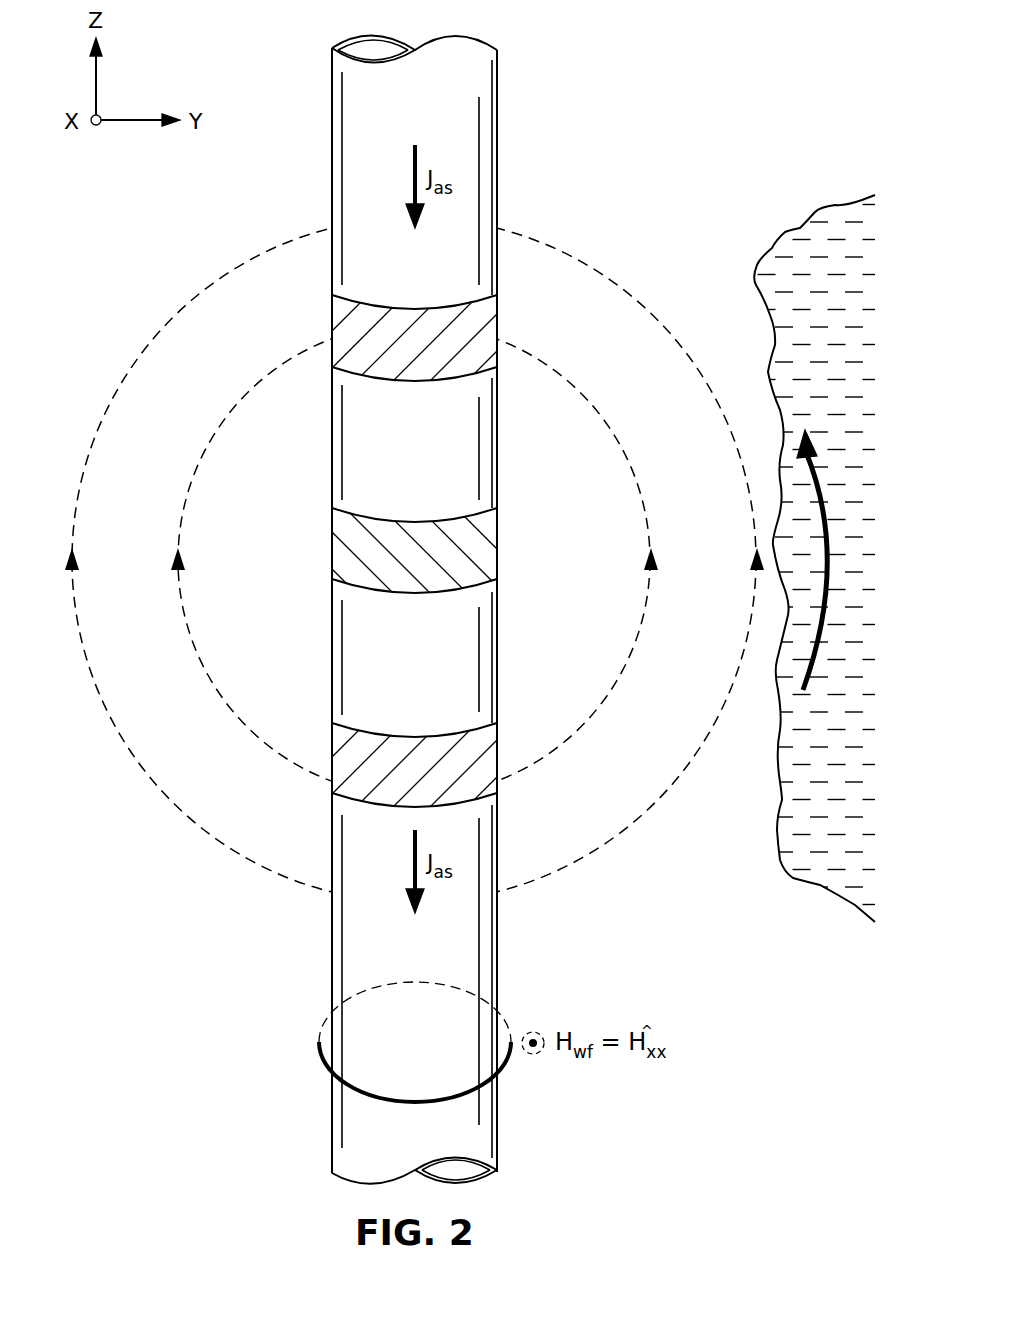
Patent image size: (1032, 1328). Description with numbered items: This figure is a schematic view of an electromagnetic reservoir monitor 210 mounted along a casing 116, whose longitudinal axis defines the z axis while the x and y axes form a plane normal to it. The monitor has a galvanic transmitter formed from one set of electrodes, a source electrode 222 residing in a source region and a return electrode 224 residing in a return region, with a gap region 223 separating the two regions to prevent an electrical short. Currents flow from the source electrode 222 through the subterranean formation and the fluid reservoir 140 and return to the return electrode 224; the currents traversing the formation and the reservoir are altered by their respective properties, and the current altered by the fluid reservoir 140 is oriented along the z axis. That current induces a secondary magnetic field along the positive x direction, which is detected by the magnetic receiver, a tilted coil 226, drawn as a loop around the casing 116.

The casing 116 is at (498, 168).
The electromagnetic reservoir monitor 210 is at (134, 269).
The source electrode 222 is at (415, 745).
The gap region 223 is at (415, 532).
The return electrode 224 is at (415, 320).
The tilted coil 226 is at (320, 1042).
The fluid reservoir 140 is at (776, 833).